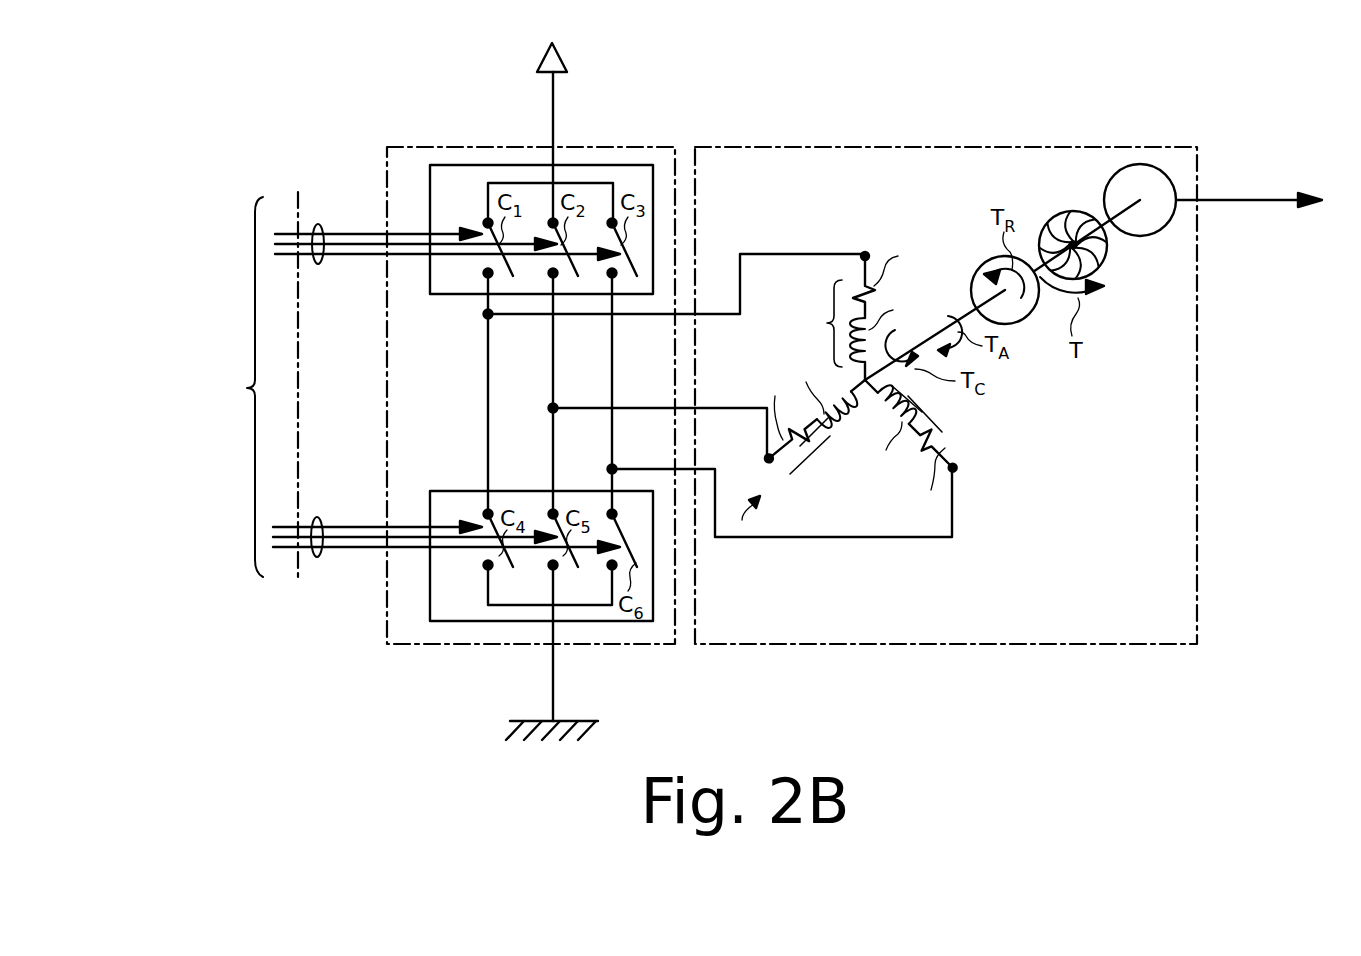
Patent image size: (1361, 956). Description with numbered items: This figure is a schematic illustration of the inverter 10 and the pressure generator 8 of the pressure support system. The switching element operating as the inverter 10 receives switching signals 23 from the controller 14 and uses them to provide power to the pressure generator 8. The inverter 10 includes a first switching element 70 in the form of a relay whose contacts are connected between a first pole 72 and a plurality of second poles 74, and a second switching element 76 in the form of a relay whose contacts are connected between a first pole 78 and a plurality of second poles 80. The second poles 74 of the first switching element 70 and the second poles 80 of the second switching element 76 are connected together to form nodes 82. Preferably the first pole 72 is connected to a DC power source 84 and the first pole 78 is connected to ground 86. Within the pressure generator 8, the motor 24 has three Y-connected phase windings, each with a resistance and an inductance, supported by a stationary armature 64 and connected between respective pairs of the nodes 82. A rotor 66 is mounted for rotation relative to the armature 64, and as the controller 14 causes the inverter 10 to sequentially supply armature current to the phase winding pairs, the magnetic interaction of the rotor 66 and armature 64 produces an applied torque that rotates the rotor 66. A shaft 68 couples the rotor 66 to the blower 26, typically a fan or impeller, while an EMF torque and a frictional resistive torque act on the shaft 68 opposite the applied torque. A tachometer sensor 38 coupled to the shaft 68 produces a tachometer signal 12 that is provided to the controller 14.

The pressure generator 8 is at (1198, 390).
The inverter 10 is at (387, 346).
The tachometer signal 12 is at (1258, 202).
The controller 14 is at (198, 387).
The switching signals 23 is at (318, 222).
The motor 24 is at (869, 341).
The blower 26 is at (1067, 220).
The tachometer sensor 38 is at (1128, 165).
The stationary armature 64 is at (744, 512).
The rotor 66 is at (978, 274).
The shaft 68 is at (1106, 234).
The first switching element 70 is at (515, 164).
The first pole 72 is at (553, 161).
The second poles 74 is at (527, 371).
The second switching element 76 is at (603, 626).
The first pole 78 is at (550, 634).
The second poles 80 is at (510, 414).
The nodes 82 is at (692, 395).
The DC power source 84 is at (560, 56).
The ground 86 is at (506, 728).